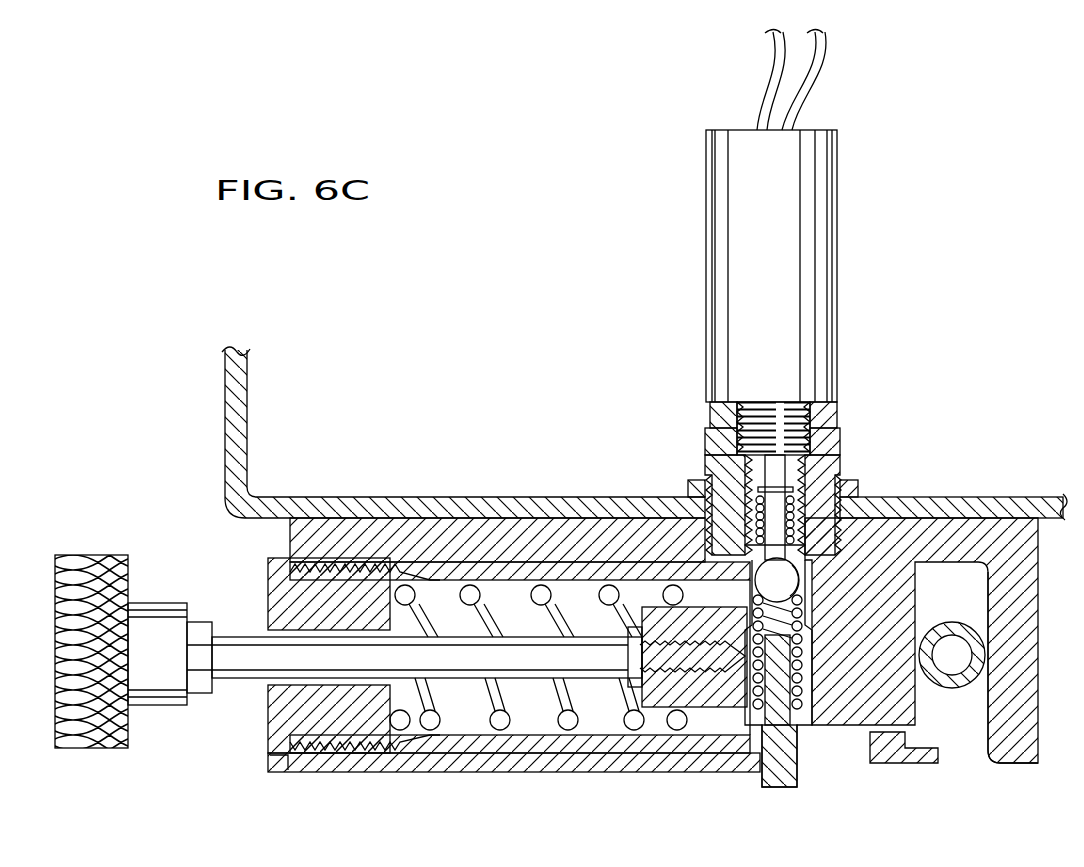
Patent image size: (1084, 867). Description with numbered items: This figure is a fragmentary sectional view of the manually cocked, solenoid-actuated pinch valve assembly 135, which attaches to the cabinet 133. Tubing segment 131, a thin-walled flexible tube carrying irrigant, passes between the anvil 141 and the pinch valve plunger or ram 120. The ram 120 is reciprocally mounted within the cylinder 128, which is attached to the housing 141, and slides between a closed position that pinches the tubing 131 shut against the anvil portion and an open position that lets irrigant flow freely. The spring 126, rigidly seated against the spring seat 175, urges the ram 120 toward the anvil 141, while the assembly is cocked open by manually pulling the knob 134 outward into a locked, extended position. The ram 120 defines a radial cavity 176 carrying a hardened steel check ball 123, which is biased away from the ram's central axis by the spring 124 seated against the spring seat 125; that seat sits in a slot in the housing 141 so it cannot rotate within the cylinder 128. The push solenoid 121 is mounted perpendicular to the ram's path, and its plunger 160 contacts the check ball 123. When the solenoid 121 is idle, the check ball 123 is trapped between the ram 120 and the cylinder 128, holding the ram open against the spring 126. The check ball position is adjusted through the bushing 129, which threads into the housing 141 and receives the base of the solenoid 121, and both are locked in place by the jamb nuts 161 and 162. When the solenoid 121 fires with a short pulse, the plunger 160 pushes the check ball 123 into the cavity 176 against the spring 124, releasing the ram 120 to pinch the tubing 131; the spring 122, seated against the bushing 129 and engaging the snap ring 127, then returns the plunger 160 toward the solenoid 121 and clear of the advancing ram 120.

The push solenoid 121 is at (820, 288).
The jamb nut 161 is at (838, 412).
The spring 122 is at (836, 478).
The bushing 129 is at (740, 475).
The jamb nut 162 is at (858, 492).
The check ball 123 is at (862, 545).
The snap ring 127 is at (757, 512).
The plunger 160 is at (745, 548).
The cabinet 133 is at (225, 437).
The cylinder 128 is at (500, 562).
The pinch valve assembly 135 is at (540, 782).
The spring seat 175 is at (277, 772).
The knob 134 is at (115, 750).
The spring 126 is at (590, 723).
The spring 124 is at (800, 590).
The spring seat 125 is at (778, 772).
The radial cavity 176 is at (808, 655).
The pinch valve plunger 120 is at (856, 700).
The anvil 141 is at (1017, 740).
The tubing segment 131 is at (950, 690).